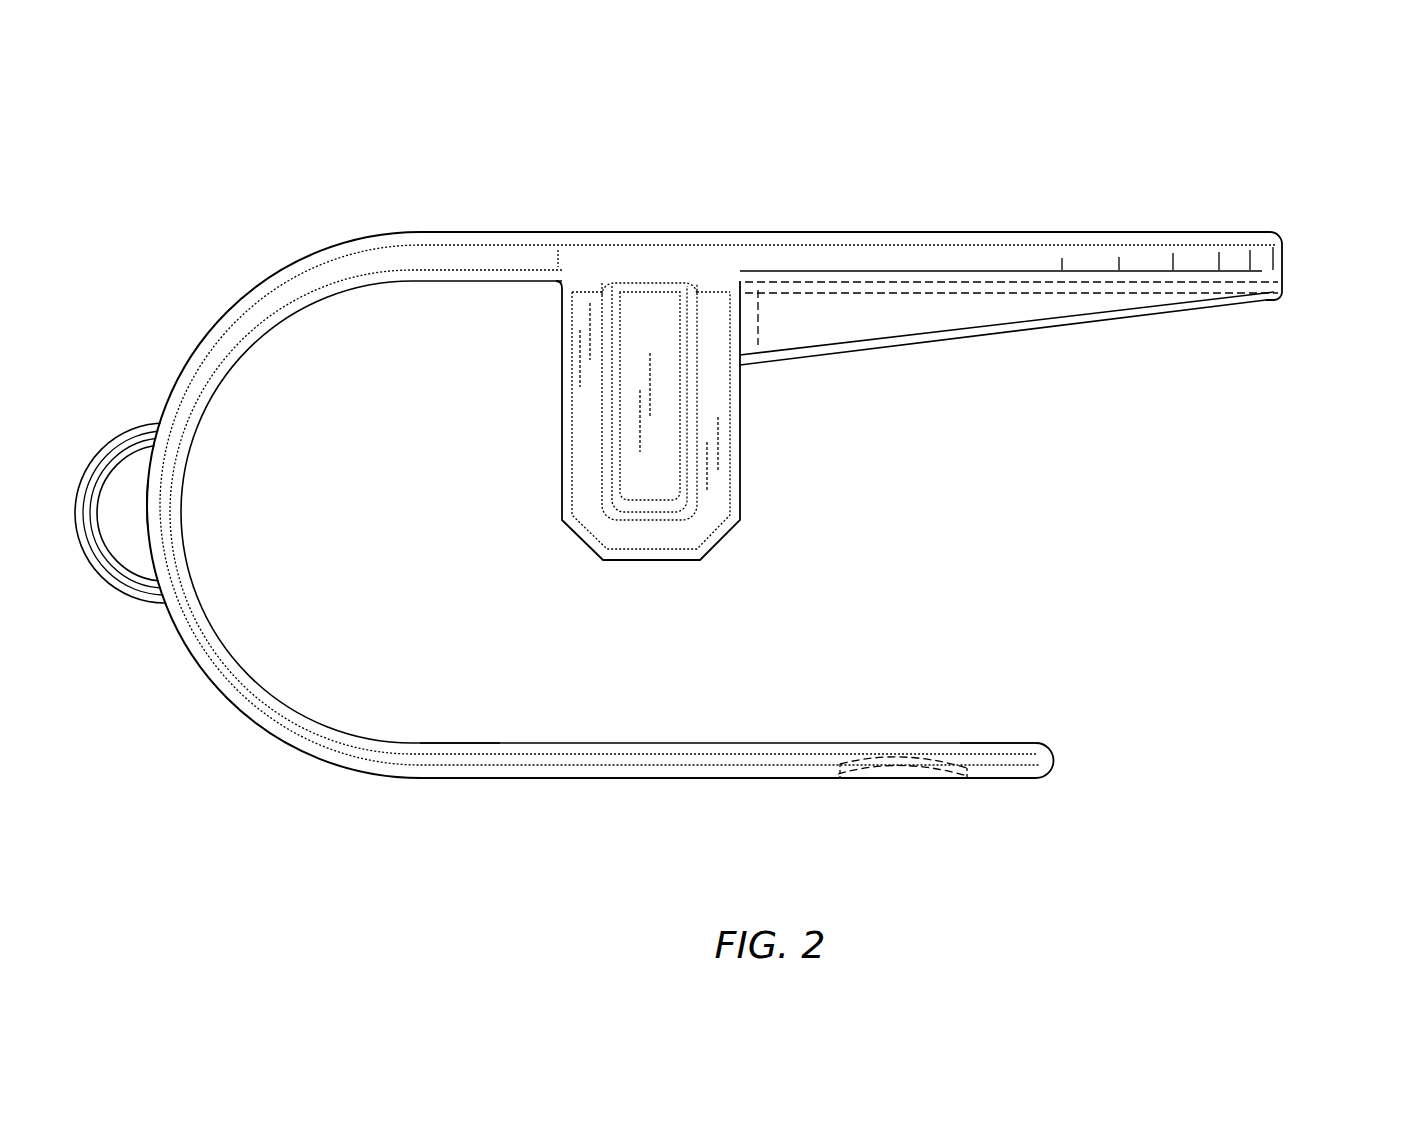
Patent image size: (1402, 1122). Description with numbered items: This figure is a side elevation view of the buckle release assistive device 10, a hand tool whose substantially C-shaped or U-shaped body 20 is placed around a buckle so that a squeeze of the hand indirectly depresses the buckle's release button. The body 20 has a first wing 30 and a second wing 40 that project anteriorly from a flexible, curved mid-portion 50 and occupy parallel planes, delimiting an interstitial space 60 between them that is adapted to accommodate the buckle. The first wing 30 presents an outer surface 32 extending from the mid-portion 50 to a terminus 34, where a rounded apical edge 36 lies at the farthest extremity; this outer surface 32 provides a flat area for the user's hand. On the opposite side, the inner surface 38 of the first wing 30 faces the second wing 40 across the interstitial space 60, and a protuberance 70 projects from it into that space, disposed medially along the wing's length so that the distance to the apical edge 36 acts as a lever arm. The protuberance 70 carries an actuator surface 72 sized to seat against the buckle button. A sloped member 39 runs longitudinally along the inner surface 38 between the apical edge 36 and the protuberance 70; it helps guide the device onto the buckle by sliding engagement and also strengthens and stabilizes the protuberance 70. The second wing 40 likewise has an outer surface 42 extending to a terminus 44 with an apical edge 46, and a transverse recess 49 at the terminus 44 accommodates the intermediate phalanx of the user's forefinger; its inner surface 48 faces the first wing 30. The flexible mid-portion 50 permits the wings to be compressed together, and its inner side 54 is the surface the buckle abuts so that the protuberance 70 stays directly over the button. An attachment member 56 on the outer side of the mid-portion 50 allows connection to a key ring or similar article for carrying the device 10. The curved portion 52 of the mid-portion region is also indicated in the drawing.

The buckle release assistive device 10 is at (1163, 106).
The body 20 is at (262, 292).
The first wing 30 is at (653, 260).
The outer surface 32 is at (860, 228).
The terminus 34 is at (1208, 232).
The apical edge 36 is at (1284, 260).
The inner surface 38 is at (470, 283).
The sloped member 39 is at (885, 348).
The second wing 40 is at (552, 768).
The outer surface 42 is at (678, 778).
The terminus 44 is at (958, 803).
The apical edge 46 is at (1055, 757).
The inner surface 48 is at (460, 742).
The transverse recess 49 is at (902, 758).
The mid-portion 50 is at (164, 533).
The curved portion 52 is at (182, 498).
The inner side 54 is at (147, 517).
The attachment member 56 is at (118, 437).
The interstitial space 60 is at (834, 660).
The protuberance 70 is at (713, 483).
The actuator surface 72 is at (648, 565).